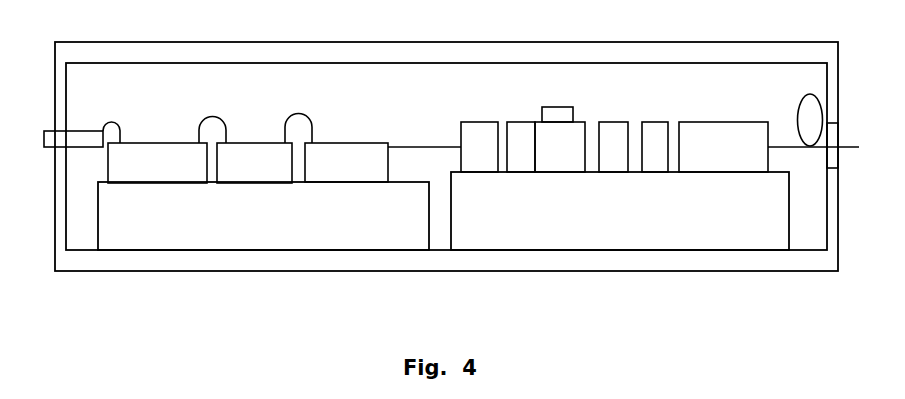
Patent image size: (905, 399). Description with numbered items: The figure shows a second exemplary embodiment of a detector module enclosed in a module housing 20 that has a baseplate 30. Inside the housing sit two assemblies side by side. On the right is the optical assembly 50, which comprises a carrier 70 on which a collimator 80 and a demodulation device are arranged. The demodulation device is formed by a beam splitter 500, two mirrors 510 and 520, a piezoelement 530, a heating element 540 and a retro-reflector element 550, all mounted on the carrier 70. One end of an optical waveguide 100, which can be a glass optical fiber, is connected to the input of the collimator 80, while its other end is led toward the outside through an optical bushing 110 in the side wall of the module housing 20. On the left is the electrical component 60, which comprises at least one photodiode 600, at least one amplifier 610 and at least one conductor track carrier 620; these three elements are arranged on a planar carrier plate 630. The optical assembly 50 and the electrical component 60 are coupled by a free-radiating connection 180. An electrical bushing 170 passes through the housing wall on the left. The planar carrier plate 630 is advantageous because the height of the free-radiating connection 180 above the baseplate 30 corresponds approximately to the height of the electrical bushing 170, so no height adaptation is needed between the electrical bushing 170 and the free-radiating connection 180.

The module housing 20 is at (572, 52).
The baseplate 30 is at (443, 260).
The optical assembly 50 is at (620, 194).
The electrical component 60 is at (263, 215).
The carrier 70 is at (620, 211).
The collimator 80 is at (723, 147).
The optical waveguide 100 is at (808, 115).
The optical bushing 110 is at (838, 133).
The electrical bushing 170 is at (55, 133).
The free-radiating connection 180 is at (437, 145).
The beam splitter 500 is at (660, 137).
The mirror 510 is at (617, 137).
The mirror 520 is at (479, 147).
The piezoelement 530 is at (520, 137).
The heating element 540 is at (567, 115).
The retro-reflector element 550 is at (560, 147).
The photodiode 600 is at (346, 162).
The amplifier 610 is at (254, 163).
The conductor track carrier 620 is at (157, 163).
The planar carrier plate 630 is at (263, 216).